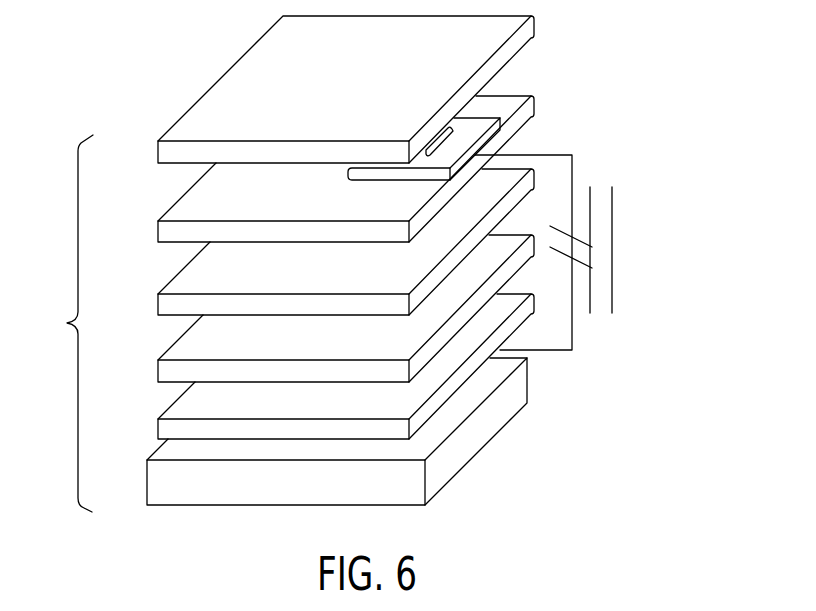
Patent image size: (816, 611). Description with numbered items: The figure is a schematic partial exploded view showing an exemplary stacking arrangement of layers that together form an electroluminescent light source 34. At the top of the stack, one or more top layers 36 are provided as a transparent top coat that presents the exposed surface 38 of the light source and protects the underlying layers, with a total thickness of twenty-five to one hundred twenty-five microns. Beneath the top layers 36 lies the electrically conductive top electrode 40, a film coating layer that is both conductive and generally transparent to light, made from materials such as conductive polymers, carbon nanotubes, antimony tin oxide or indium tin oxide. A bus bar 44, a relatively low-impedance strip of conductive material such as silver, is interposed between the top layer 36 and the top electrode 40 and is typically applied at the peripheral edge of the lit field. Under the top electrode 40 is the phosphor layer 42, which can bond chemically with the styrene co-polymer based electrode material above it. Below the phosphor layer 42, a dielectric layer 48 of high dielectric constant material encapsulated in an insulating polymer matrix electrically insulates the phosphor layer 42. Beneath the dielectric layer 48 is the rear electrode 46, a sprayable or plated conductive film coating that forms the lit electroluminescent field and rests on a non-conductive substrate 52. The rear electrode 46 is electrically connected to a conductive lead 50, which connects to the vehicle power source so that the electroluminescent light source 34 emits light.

The electroluminescent light source 34 is at (64, 323).
The top layer 36 is at (324, 106).
The exposed surface 38 is at (263, 75).
The top electrode 40 is at (178, 238).
The phosphor layer 42 is at (178, 311).
The bus bar 44 is at (481, 122).
The rear electrode 46 is at (153, 430).
The dielectric layer 48 is at (175, 373).
The conductive lead 50 is at (600, 257).
The substrate 52 is at (147, 480).